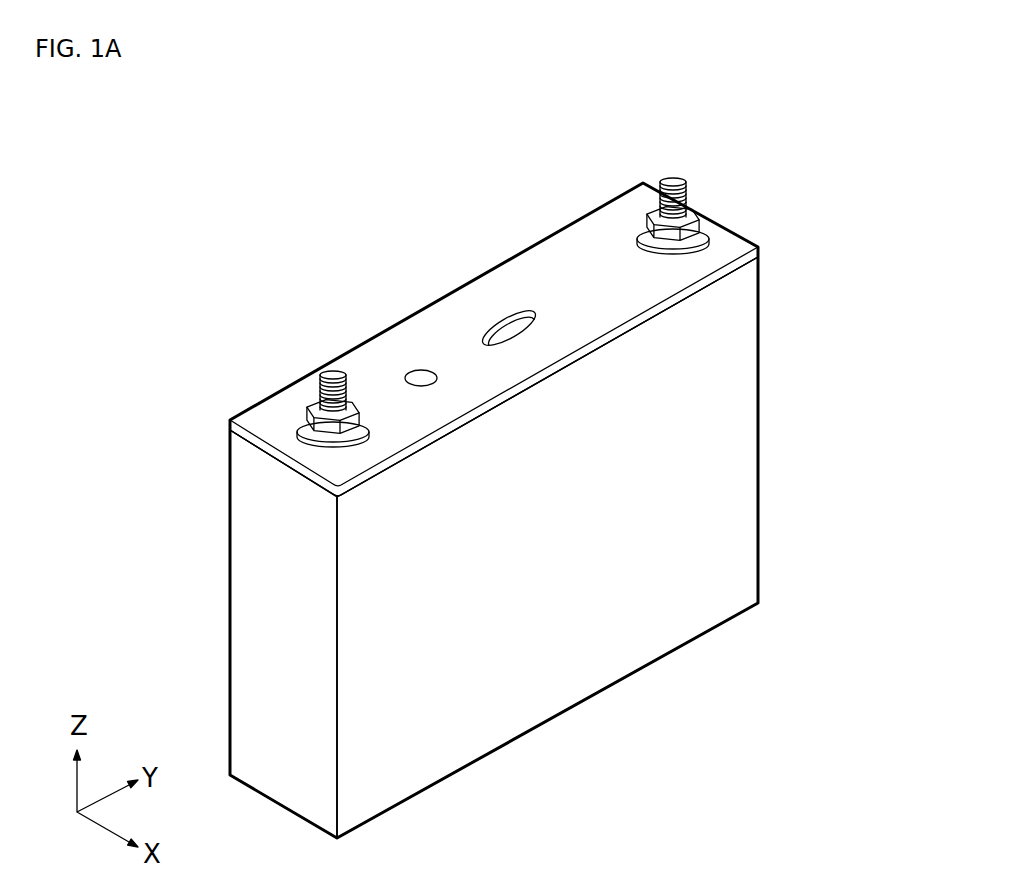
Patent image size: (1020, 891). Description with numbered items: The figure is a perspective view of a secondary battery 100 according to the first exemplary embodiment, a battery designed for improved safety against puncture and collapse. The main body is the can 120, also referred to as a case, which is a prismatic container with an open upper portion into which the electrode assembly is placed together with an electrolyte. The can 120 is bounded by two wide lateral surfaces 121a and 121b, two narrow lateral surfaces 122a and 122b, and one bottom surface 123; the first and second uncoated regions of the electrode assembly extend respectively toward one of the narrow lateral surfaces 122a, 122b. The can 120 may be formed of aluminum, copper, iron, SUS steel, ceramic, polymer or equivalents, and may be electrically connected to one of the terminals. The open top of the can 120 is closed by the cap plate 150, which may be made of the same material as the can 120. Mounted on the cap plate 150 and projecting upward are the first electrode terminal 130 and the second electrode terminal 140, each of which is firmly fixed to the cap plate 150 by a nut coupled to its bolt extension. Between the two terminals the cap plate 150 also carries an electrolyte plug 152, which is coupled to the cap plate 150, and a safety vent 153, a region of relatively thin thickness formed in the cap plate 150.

The secondary battery 100 is at (548, 206).
The can 120 is at (772, 490).
The wide lateral surface 121a is at (228, 523).
The wide lateral surface 121b is at (367, 572).
The narrow lateral surface 122a is at (758, 380).
The narrow lateral surface 122b is at (268, 646).
The bottom surface 123 is at (493, 753).
The first electrode terminal 130 is at (302, 377).
The second electrode terminal 140 is at (690, 163).
The cap plate 150 is at (445, 315).
The electrolyte plug 152 is at (417, 373).
The safety vent 153 is at (503, 330).